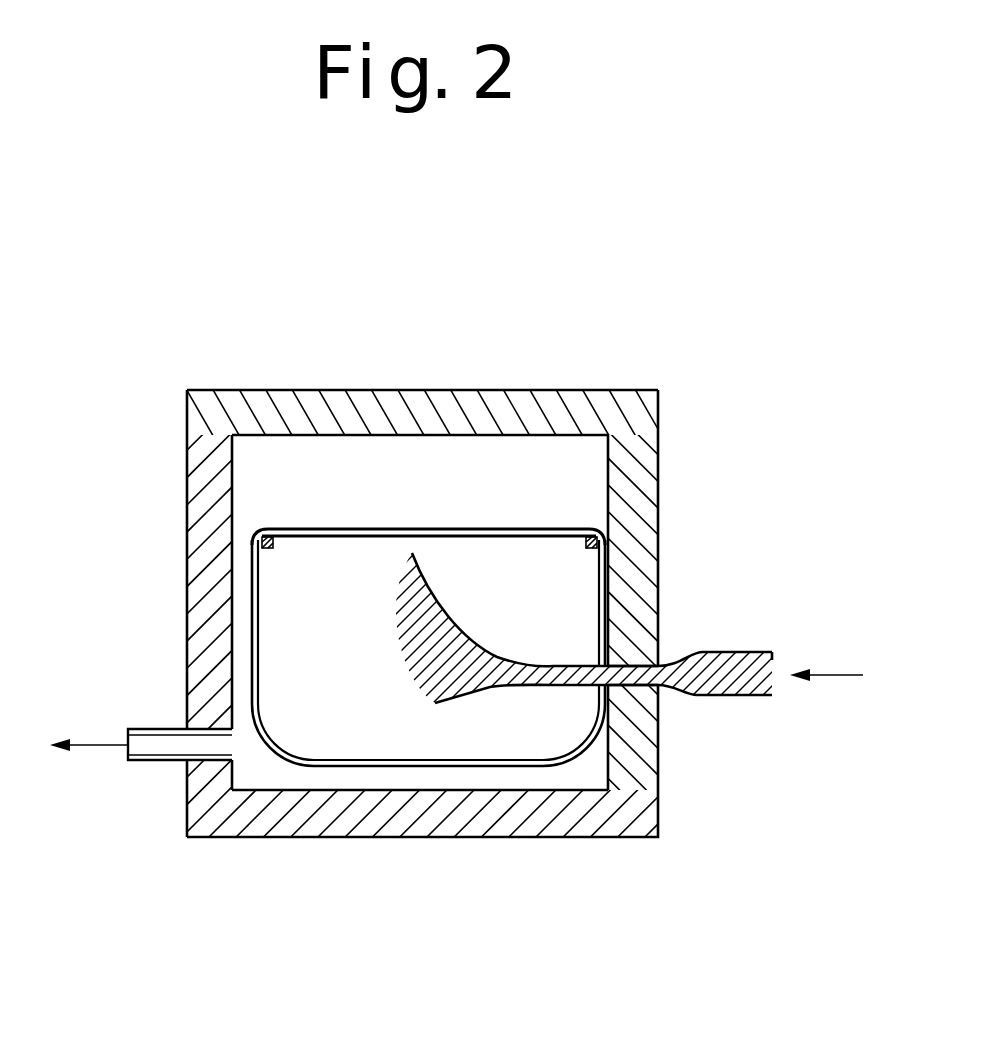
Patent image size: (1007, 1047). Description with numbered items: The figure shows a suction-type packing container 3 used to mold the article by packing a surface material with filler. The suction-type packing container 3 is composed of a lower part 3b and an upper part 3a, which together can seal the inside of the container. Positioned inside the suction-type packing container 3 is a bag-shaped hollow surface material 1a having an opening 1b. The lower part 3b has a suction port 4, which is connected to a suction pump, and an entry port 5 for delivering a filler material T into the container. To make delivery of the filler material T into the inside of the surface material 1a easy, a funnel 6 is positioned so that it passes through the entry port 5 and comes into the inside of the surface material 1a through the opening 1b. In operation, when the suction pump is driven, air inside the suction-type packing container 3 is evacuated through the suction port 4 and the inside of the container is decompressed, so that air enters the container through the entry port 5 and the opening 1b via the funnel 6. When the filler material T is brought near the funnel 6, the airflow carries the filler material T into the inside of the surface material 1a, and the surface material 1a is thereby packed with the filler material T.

The surface material 1a is at (403, 768).
The opening 1b is at (586, 666).
The suction-type packing container 3 is at (503, 567).
The upper part 3a is at (202, 417).
The lower part 3b is at (200, 535).
The suction port 4 is at (157, 748).
The entry port 5 is at (658, 667).
The funnel 6 is at (668, 687).
The filler material T is at (772, 688).